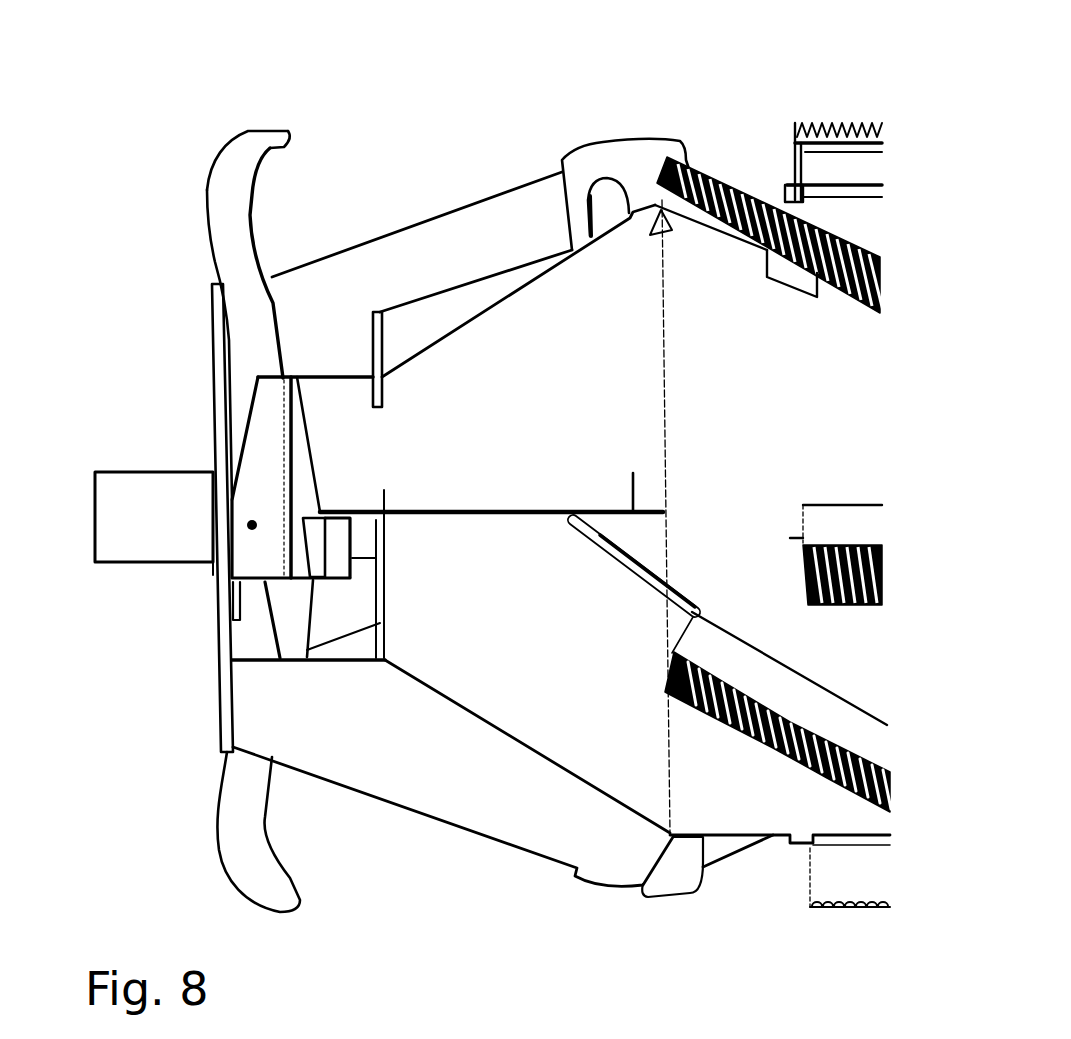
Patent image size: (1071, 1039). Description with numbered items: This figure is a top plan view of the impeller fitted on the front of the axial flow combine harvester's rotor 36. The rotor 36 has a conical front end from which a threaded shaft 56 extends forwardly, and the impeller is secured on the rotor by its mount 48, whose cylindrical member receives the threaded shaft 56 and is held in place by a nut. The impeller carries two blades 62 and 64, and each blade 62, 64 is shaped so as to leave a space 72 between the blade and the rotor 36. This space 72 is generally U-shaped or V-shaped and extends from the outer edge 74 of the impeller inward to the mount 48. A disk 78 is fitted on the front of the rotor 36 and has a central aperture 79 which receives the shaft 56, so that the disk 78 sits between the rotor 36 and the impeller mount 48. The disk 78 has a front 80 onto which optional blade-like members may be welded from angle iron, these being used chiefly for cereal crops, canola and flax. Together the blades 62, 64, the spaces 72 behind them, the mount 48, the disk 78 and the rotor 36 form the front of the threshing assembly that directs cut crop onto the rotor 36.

The rotor 36 is at (571, 367).
The mount 48 is at (379, 268).
The threaded shaft 56 is at (143, 513).
The blade 62 is at (230, 180).
The blade 64 is at (245, 833).
The space 72 is at (312, 200).
The outer edge 74 is at (263, 140).
The disk 78 is at (222, 602).
The central aperture 79 is at (205, 563).
The front 80 is at (213, 447).